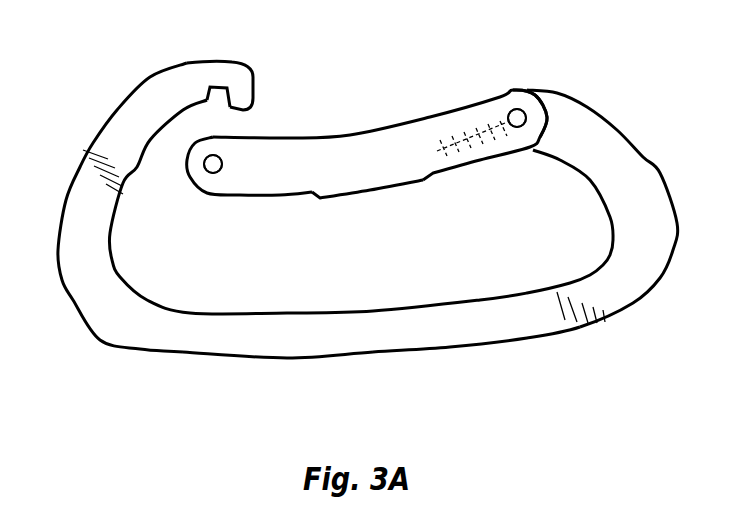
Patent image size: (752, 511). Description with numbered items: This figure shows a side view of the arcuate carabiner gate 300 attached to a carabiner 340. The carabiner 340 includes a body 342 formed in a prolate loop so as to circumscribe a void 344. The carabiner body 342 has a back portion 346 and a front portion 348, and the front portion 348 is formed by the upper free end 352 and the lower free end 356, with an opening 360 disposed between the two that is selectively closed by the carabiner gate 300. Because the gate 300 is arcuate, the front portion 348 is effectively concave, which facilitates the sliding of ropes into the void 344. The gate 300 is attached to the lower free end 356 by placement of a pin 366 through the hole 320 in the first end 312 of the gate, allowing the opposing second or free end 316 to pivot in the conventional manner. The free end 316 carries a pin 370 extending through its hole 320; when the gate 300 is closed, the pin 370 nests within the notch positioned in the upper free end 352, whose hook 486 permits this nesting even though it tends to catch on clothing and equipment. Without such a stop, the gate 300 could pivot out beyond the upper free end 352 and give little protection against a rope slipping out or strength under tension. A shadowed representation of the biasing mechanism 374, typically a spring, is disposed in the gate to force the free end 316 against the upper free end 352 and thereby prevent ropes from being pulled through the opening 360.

The carabiner gate 300 is at (379, 82).
The first end 312 is at (548, 127).
The second or free end 316 is at (187, 170).
The hole 320 is at (213, 174).
The carabiner 340 is at (123, 320).
The body 342 is at (280, 343).
The void 344 is at (240, 255).
The back portion 346 is at (370, 342).
The front portion 348 is at (466, 73).
The upper free end 352 is at (226, 62).
The lower free end 356 is at (533, 88).
The opening 360 is at (277, 110).
The pin 366 is at (526, 117).
The pin 370 is at (221, 172).
The biasing mechanism 374 is at (480, 152).
The hook 486 is at (247, 100).